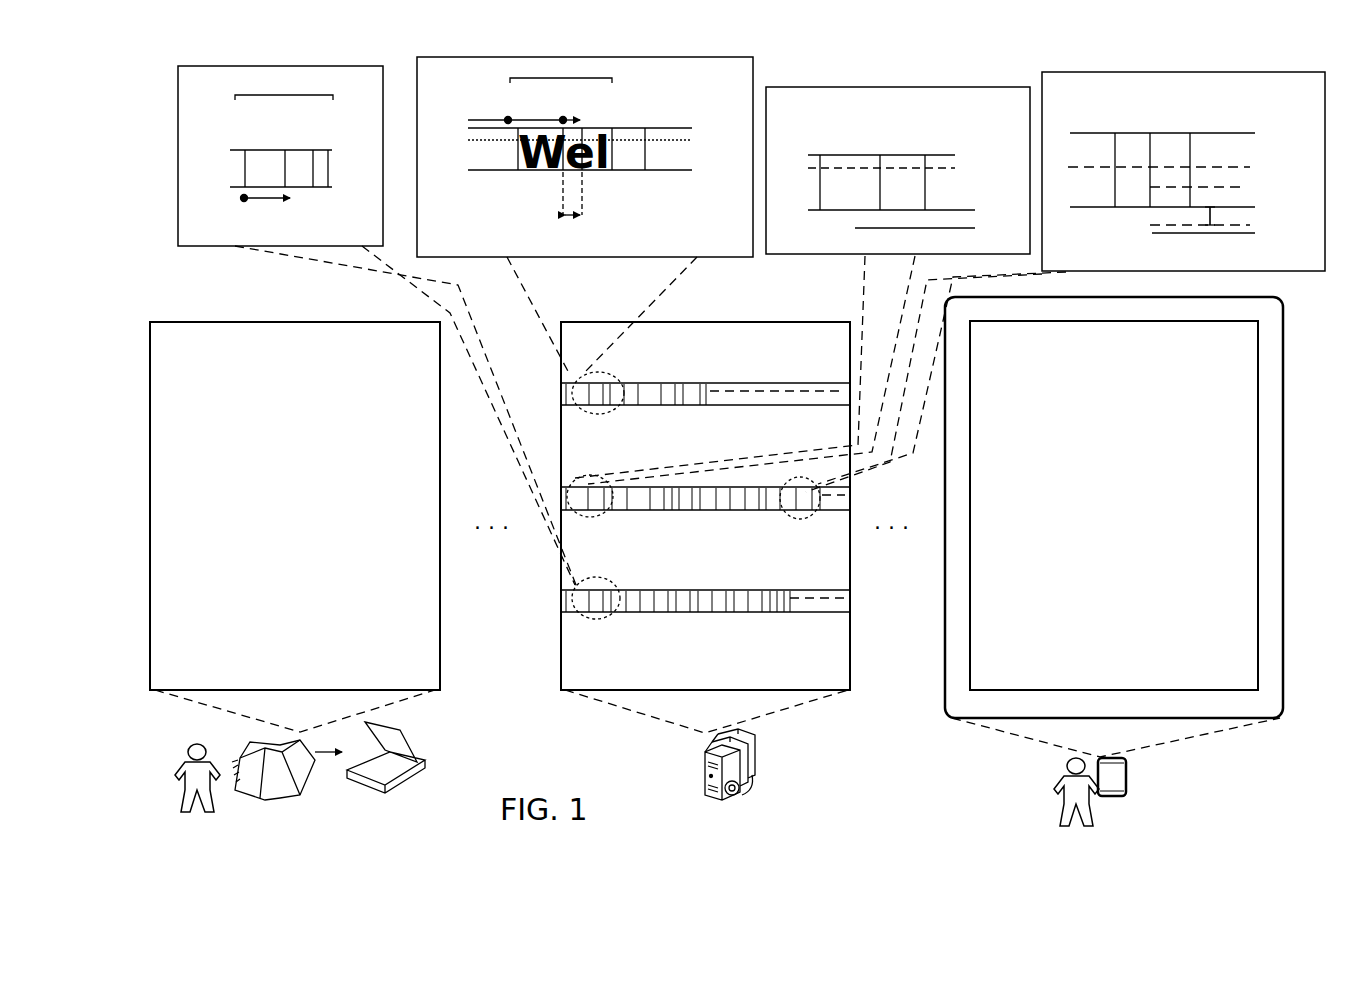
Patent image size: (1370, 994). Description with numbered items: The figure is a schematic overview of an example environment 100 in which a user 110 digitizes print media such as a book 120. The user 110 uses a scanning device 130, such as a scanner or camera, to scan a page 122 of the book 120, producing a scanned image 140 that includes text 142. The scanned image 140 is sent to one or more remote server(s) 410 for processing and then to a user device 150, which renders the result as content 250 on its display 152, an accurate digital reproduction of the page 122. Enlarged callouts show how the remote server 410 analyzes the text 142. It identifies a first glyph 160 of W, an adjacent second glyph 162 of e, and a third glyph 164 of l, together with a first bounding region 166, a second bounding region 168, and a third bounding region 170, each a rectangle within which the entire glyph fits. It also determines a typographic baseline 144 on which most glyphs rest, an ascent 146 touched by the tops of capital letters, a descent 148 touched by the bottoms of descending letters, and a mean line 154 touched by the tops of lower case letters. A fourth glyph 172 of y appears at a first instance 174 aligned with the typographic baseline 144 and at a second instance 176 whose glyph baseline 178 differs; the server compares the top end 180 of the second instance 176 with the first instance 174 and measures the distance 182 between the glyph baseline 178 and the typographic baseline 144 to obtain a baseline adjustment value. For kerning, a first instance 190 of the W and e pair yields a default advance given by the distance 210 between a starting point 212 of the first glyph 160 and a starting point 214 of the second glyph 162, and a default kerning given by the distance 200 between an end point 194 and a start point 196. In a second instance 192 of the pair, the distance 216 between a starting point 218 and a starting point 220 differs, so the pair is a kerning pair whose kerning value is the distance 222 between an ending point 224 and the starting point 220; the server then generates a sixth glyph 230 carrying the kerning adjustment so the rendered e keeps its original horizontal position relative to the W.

The environment 100 is at (877, 75).
The user 110 is at (634, 797).
The book 120 is at (225, 740).
The page 122 is at (290, 775).
The scanning device 130 is at (424, 737).
The scanned image 140 is at (456, 652).
The text 142 is at (232, 372).
The typographic baseline 144 is at (690, 170).
The ascent 146 is at (680, 128).
The descent 148 is at (960, 228).
The user device 150 is at (1127, 772).
The display 152 is at (1262, 656).
The mean line 154 is at (692, 140).
The first glyph 160 is at (250, 143).
The second glyph 162 is at (565, 112).
The third glyph 164 is at (632, 118).
The first bounding region 166 is at (537, 170).
The second bounding region 168 is at (595, 170).
The third bounding region 170 is at (640, 170).
The fourth glyph 172 is at (893, 140).
The first instance 174 is at (850, 182).
The second instance 176 is at (1057, 171).
The glyph baseline 178 is at (1250, 226).
The top end 180 is at (1255, 187).
The distance 182 is at (1214, 215).
The first instance of pair of glyphs 190 is at (561, 71).
The second instance of pair of glyphs 192 is at (284, 88).
The end point 194 is at (562, 193).
The start point 196 is at (586, 193).
The distance 200 is at (573, 231).
The distance 210 is at (527, 120).
The starting point 212 is at (472, 119).
The starting point 214 is at (575, 120).
The distance 216 is at (262, 200).
The starting point 218 is at (241, 198).
The starting point 220 is at (283, 200).
The distance 222 is at (288, 150).
The ending point 224 is at (283, 150).
The sixth glyph 230 is at (303, 140).
The content 250 is at (1152, 405).
The remote server 410 is at (721, 785).